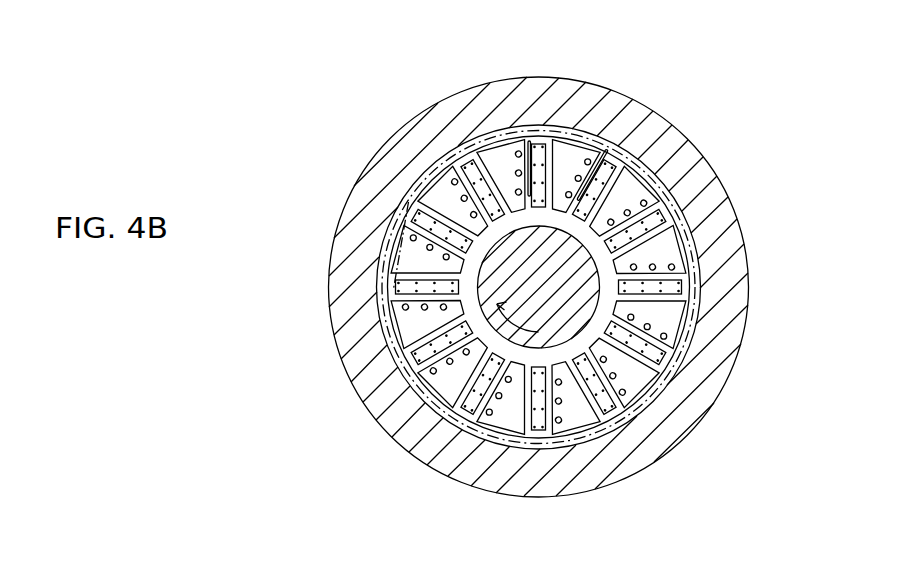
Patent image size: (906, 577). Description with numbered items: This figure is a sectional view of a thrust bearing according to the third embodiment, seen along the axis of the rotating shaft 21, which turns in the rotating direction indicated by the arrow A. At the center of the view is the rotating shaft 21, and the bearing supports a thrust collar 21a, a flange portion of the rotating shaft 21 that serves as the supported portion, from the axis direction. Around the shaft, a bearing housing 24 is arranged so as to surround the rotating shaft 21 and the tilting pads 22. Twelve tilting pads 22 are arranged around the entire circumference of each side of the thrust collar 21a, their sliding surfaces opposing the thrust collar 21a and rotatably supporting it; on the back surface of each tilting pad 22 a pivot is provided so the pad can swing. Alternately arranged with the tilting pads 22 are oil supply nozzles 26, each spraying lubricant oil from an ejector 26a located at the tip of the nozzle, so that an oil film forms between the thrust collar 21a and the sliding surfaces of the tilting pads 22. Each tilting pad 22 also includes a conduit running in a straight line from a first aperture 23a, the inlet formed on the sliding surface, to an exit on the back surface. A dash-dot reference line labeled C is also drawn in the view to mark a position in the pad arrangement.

The rotating shaft 21 is at (577, 304).
The thrust collar 21a is at (690, 328).
The tilting pad 22 is at (570, 150).
The first aperture 23a is at (532, 193).
The bearing housing 24 is at (727, 215).
The oil supply nozzle 26 is at (548, 145).
The ejector 26a is at (396, 294).
The center line C is at (401, 227).
The arrow A is at (518, 314).